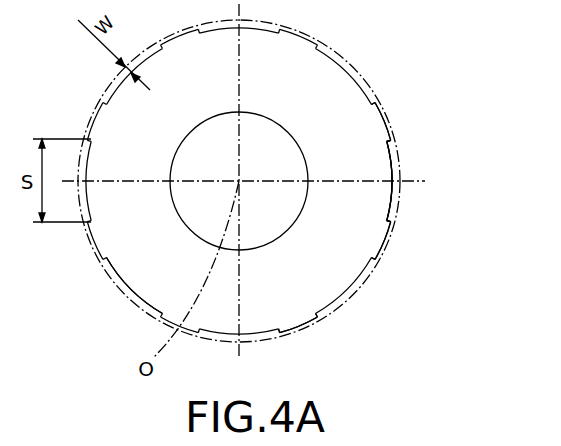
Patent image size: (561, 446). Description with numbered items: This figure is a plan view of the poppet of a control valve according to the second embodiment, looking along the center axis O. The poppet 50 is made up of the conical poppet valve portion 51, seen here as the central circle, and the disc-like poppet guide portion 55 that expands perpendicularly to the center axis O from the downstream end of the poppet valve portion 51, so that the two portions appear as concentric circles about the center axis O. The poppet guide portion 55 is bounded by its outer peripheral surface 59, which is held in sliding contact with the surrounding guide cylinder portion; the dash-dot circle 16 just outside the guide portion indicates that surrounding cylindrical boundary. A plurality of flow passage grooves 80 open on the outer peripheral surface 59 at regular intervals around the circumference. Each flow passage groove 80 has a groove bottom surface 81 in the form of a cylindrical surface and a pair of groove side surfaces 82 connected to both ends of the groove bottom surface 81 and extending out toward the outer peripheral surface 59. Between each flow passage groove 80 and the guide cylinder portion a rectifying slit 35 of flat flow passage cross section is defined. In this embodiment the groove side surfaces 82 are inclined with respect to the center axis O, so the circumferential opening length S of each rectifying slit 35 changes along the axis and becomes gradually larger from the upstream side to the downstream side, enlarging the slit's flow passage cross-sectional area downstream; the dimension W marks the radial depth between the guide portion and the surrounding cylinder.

The reference circle (housing inner surface) 16 is at (362, 80).
The rectifying slit 35 is at (110, 277).
The poppet 50 is at (88, 127).
The poppet valve portion 51 is at (302, 152).
The poppet guide portion 55 is at (384, 131).
The outer peripheral surface 59 is at (313, 328).
The flow passage groove 80 is at (493, 142).
The groove bottom surface 81 is at (397, 185).
The groove side surfaces 82 is at (397, 147).